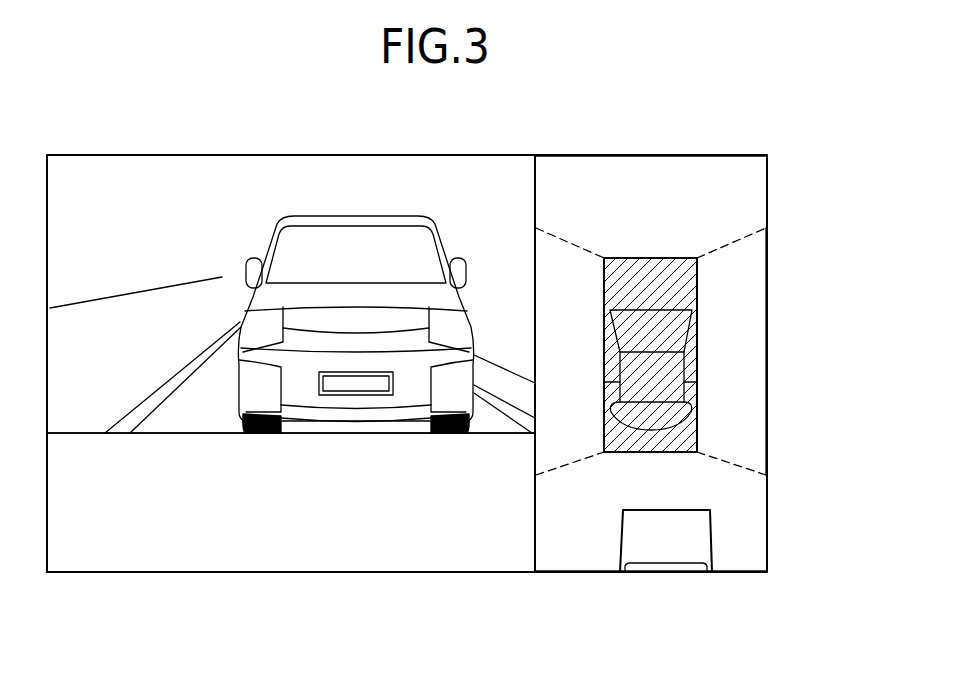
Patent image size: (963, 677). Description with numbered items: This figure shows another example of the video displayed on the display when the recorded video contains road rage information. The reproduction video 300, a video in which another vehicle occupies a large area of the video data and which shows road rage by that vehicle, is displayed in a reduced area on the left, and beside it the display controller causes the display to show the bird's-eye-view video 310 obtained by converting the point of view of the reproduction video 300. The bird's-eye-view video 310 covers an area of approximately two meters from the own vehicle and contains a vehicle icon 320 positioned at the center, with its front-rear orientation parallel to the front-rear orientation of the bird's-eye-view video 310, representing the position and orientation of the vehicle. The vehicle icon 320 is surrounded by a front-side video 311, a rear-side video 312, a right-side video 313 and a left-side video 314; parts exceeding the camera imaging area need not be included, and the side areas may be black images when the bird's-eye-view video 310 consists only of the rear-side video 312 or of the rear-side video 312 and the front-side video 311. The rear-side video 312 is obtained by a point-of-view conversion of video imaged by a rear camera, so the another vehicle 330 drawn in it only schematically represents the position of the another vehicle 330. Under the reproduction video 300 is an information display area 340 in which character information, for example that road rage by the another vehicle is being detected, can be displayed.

The reproduction video 300 is at (291, 155).
The bird's-eye-view video 310 is at (651, 155).
The front-side video 311 is at (748, 190).
The rear-side video 312 is at (748, 494).
The right-side video 313 is at (748, 352).
The left-side video 314 is at (569, 433).
The vehicle icon 320 is at (680, 287).
The another vehicle 330 is at (672, 536).
The information display area 340 is at (291, 572).